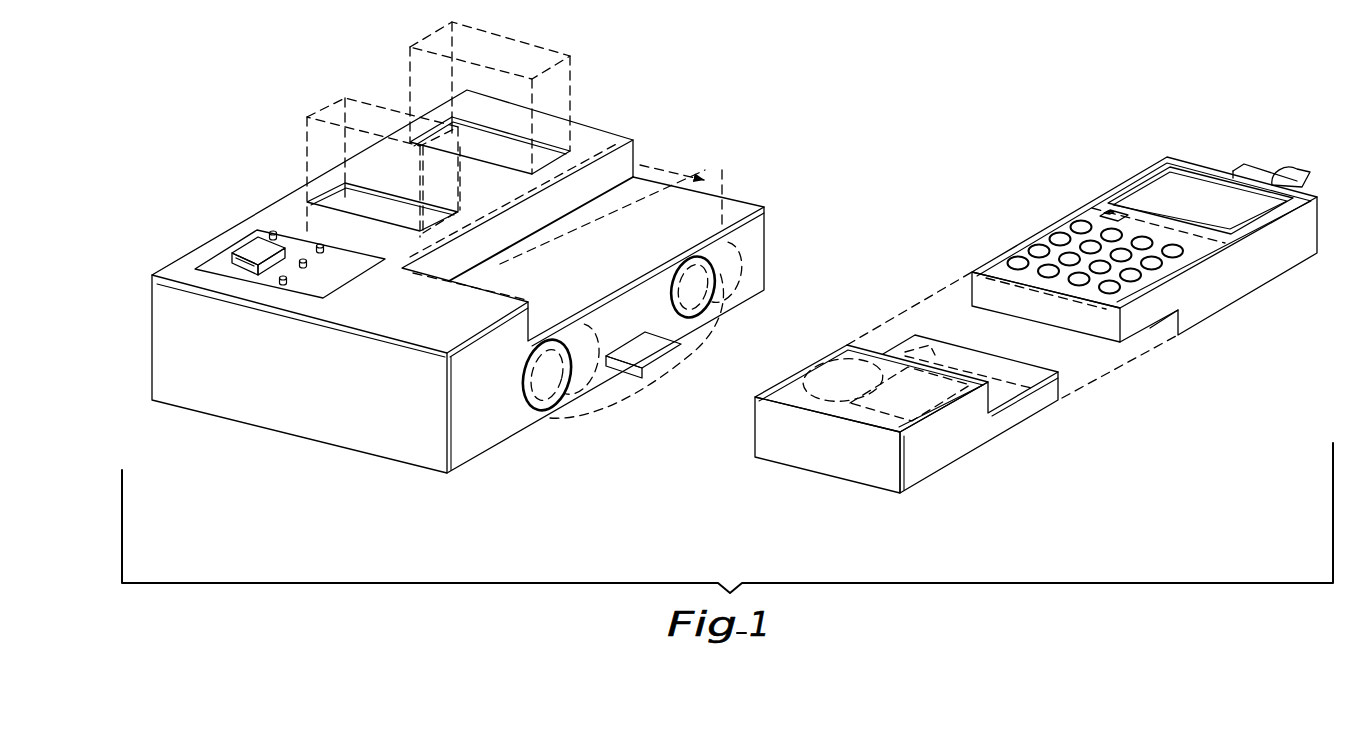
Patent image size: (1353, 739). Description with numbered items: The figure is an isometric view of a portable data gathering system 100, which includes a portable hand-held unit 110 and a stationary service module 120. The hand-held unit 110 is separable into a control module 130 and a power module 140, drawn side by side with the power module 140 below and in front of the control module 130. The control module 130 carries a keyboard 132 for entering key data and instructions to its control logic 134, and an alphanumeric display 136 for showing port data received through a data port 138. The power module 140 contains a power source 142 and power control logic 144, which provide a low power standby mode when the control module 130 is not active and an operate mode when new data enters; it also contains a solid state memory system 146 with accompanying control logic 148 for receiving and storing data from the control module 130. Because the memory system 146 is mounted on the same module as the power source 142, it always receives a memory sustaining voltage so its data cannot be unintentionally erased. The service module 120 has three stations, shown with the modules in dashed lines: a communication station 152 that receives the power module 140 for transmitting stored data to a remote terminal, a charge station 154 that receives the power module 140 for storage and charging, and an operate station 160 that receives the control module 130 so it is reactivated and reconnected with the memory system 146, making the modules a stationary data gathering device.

The portable data gathering system 100 is at (714, 548).
The portable hand-held unit 110 is at (1246, 126).
The stationary service module 120 is at (404, 466).
The control module 130 is at (1182, 337).
The keyboard 132 is at (1036, 250).
The control logic 134 is at (999, 258).
The alphanumeric display 136 is at (1144, 194).
The data port 138 is at (1291, 172).
The power module 140 is at (970, 458).
The power source 142 is at (812, 367).
The power control logic 144 is at (940, 357).
The solid state memory system 146 is at (878, 386).
The control logic 148 is at (996, 362).
The communication station 152 is at (329, 202).
The charge station 154 is at (518, 152).
The operate station 160 is at (703, 221).